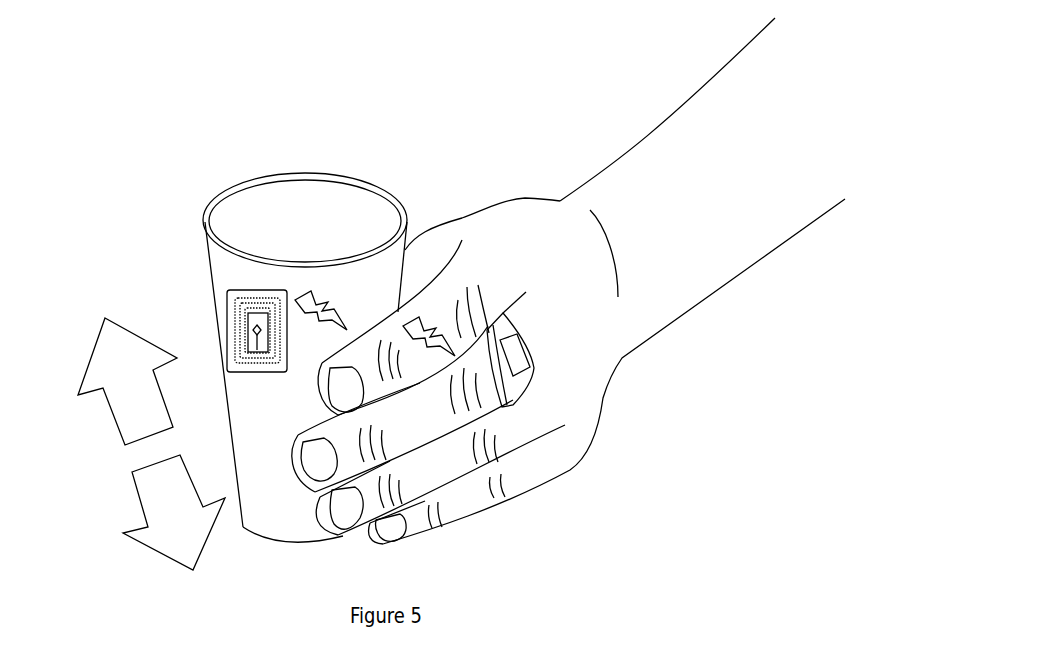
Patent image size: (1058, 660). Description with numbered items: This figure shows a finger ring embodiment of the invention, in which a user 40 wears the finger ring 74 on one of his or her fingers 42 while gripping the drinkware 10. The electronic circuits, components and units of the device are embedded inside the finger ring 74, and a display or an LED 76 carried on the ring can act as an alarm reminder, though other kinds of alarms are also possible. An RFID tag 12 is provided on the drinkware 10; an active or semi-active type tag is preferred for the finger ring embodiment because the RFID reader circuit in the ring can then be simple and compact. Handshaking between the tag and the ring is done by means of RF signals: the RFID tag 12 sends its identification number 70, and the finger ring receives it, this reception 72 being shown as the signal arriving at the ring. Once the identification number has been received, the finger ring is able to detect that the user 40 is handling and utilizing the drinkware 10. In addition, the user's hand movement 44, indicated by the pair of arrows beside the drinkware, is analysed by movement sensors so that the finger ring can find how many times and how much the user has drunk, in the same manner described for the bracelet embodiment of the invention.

The drinkware 10 is at (387, 181).
The RFID tag 12 is at (262, 375).
The user 40 is at (537, 158).
The finger 42 is at (532, 477).
The hand movement 44 is at (108, 402).
The identification number 70 is at (302, 292).
The receive 72 is at (462, 280).
The finger ring 74 is at (540, 393).
The display or LED 76 is at (532, 368).